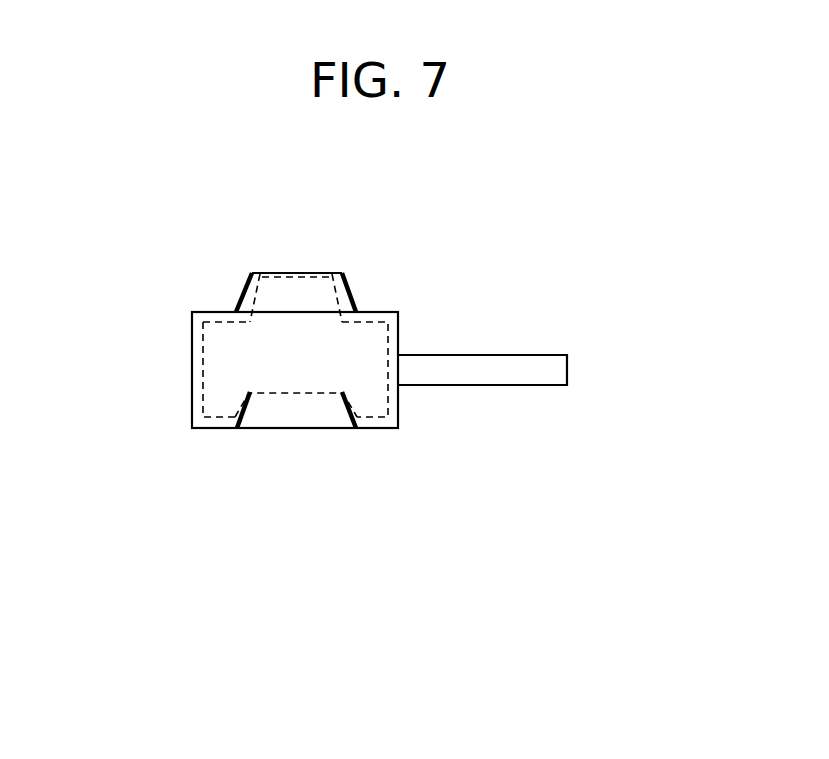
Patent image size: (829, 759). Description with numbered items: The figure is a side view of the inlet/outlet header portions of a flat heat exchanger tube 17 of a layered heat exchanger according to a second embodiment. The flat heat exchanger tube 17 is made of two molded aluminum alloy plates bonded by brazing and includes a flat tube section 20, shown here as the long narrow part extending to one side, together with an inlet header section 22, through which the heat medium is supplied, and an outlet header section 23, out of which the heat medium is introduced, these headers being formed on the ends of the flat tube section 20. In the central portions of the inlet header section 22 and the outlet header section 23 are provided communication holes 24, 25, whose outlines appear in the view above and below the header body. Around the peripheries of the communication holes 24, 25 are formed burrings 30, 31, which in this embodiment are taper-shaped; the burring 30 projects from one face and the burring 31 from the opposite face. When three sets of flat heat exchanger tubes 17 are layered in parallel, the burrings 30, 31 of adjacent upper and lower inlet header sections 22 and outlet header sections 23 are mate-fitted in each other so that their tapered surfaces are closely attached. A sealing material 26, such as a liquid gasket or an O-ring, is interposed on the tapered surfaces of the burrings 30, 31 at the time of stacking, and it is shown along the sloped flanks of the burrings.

The flat heat exchanger tube 17 is at (448, 320).
The flat tube section 20 is at (523, 377).
The inlet header section 22 is at (220, 370).
The outlet header section 23 is at (192, 372).
The communication hole 24 is at (297, 350).
The communication hole 25 is at (295, 282).
The sealing material 26 is at (247, 287).
The burring 30 is at (342, 292).
The burring 31 is at (357, 407).